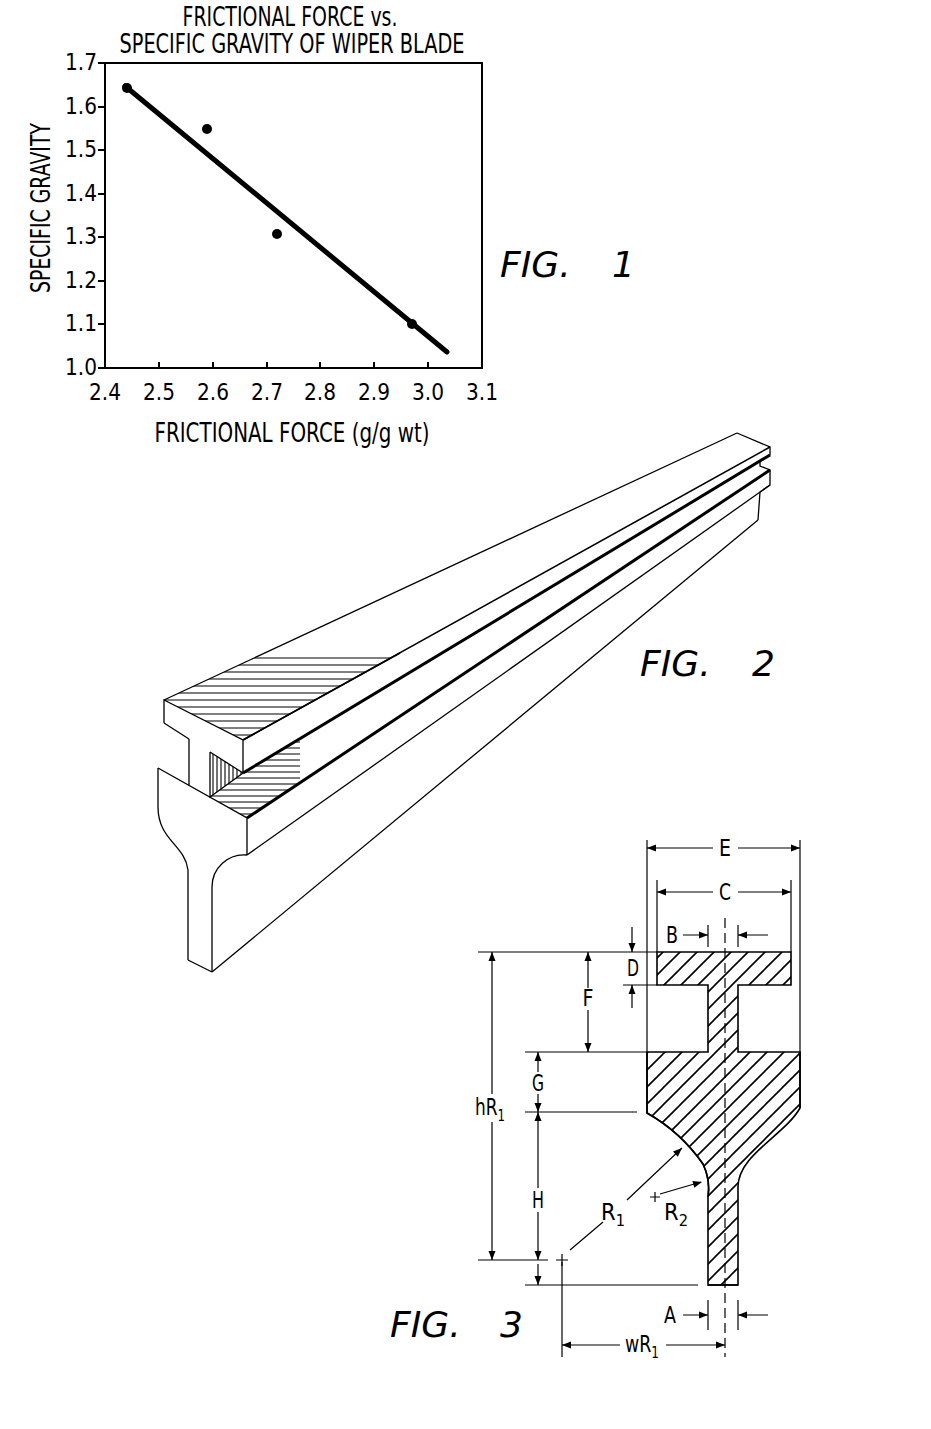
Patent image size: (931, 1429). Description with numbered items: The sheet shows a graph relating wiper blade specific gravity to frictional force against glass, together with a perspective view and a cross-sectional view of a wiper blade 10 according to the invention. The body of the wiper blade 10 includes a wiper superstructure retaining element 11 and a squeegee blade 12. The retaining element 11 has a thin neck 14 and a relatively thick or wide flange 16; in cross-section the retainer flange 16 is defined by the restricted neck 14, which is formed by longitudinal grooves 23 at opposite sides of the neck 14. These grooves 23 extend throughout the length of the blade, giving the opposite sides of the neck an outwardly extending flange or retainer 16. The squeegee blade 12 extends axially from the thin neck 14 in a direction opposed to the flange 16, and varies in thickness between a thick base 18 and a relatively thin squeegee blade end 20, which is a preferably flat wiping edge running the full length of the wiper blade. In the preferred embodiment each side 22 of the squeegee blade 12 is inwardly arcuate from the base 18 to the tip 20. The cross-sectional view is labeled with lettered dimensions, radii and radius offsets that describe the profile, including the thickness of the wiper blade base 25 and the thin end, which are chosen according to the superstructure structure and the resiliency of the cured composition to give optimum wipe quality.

In FIG. 2, the wiper blade 10 is at (442, 724).
In FIG. 3, the wiper blade 10 is at (734, 1124).
In FIG. 2, the wiper superstructure retaining element 11 is at (326, 733).
In FIG. 3, the wiper superstructure retaining element 11 is at (790, 1010).
In FIG. 2, the squeegee blade 12 is at (195, 863).
In FIG. 3, the squeegee blade 12 is at (657, 1117).
In FIG. 2, the thin neck 14 is at (188, 748).
In FIG. 2, the flange 16 is at (165, 712).
In FIG. 3, the flange 16 is at (791, 976).
In FIG. 2, the base 18 is at (252, 856).
In FIG. 2, the squeegee blade end 20 is at (200, 975).
In FIG. 3, the squeegee blade end 20 is at (740, 1293).
In FIG. 2, the side 22 is at (268, 917).
In FIG. 3, the longitudinal grooves 23 is at (775, 1042).
In FIG. 3, the wiper blade base 25 is at (800, 1080).